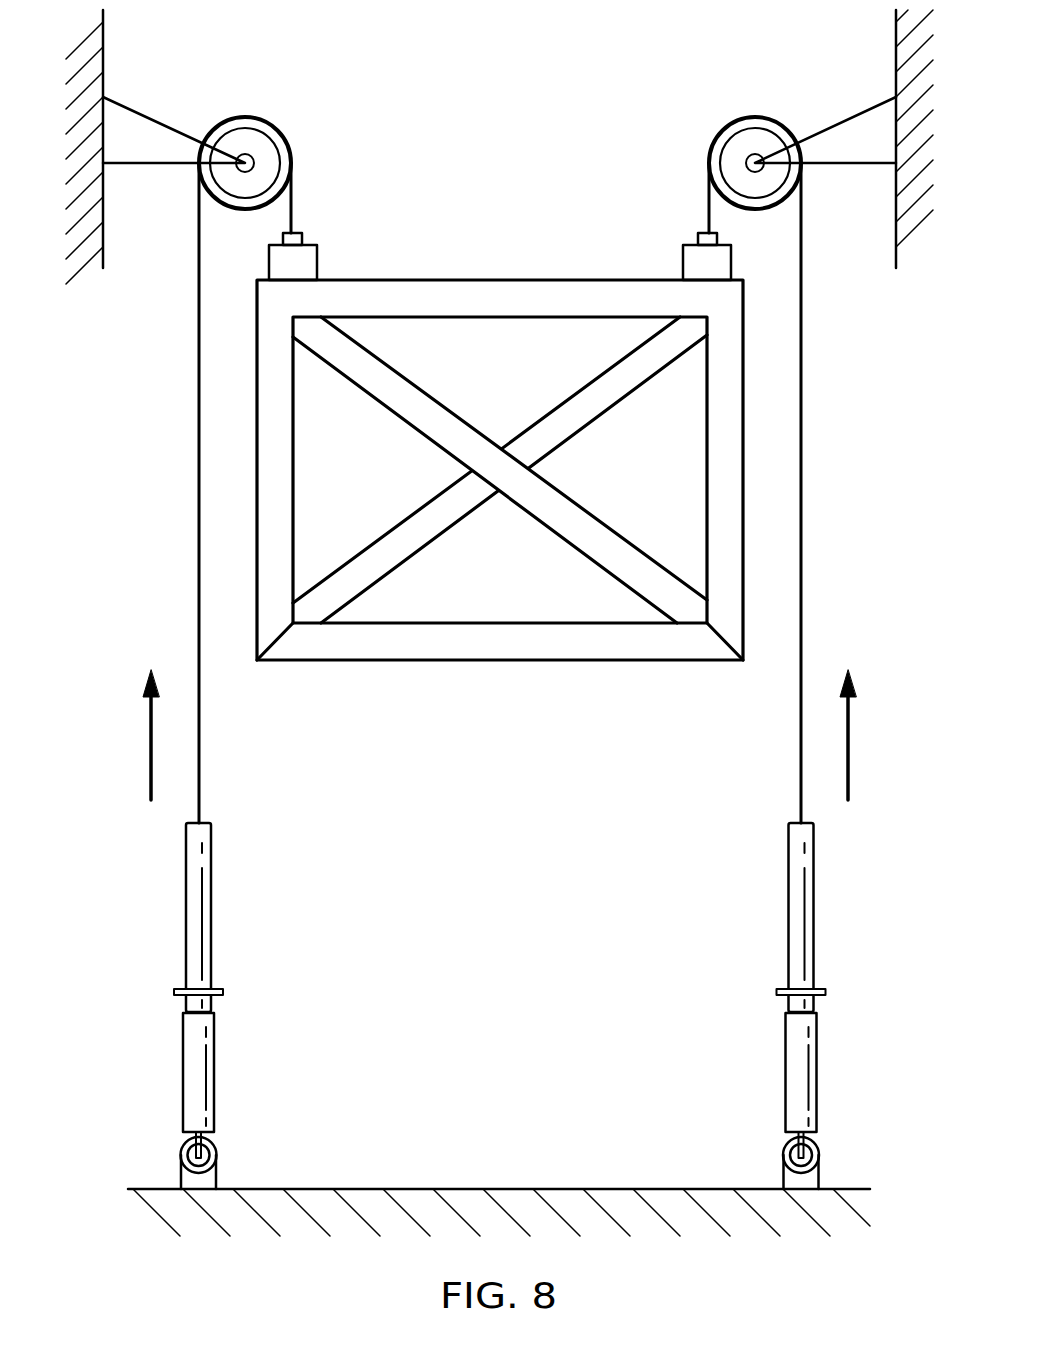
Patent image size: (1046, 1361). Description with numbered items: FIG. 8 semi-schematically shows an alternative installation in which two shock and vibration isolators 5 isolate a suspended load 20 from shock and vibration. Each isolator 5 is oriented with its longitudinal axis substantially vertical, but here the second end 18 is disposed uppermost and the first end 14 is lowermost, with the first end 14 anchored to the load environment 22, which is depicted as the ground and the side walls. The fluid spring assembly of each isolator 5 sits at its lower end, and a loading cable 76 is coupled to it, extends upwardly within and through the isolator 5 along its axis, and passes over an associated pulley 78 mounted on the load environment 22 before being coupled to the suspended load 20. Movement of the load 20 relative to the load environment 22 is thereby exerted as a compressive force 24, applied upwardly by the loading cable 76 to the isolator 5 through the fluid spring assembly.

The isolator 5 is at (500, 1006).
The first end 14 is at (162, 1101).
The second end 18 is at (238, 843).
The load 20 is at (498, 279).
The load environment 22 is at (103, 53).
The compressive force 24 is at (149, 741).
The loading cable 76 is at (197, 498).
The pulley 78 is at (241, 114).